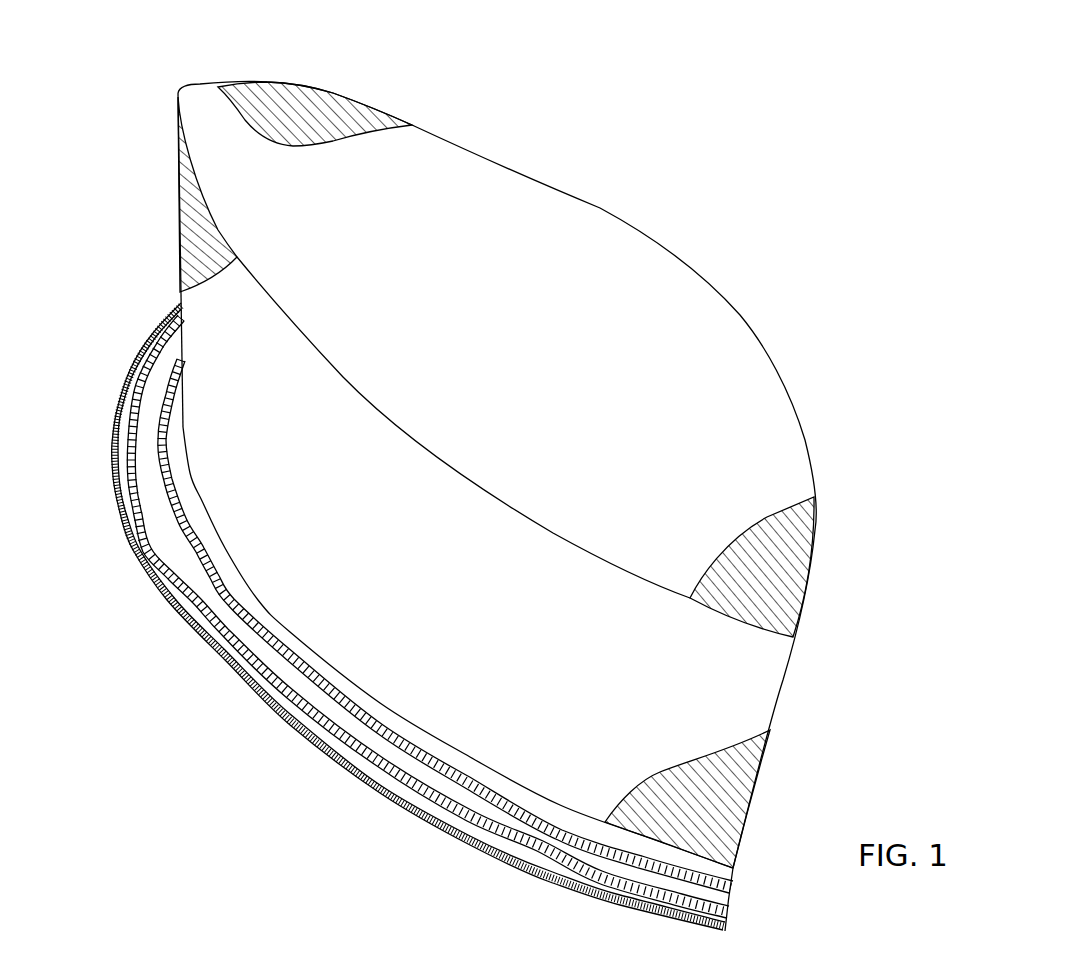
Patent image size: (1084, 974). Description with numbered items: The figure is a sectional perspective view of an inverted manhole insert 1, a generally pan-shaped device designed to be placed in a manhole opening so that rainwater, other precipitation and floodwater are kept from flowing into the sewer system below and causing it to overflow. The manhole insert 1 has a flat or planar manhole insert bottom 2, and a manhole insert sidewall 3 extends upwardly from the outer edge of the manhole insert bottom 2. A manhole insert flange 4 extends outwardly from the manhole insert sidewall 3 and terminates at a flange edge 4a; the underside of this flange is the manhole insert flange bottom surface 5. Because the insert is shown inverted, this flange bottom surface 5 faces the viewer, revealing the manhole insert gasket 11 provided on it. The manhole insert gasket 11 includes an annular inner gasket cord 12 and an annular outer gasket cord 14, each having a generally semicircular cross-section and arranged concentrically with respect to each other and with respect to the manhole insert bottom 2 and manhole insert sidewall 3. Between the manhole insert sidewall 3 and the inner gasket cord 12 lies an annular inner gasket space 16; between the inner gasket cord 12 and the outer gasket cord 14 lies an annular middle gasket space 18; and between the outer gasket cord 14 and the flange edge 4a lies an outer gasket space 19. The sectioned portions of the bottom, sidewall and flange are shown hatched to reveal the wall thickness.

The manhole insert 1 is at (74, 52).
The manhole insert bottom 2 is at (578, 226).
The manhole insert sidewall 3 is at (747, 692).
The manhole insert flange 4 is at (123, 395).
The flange edge 4a is at (110, 423).
The manhole insert flange bottom surface 5 is at (133, 507).
The manhole insert gasket 11 is at (157, 325).
The inner gasket cord 12 is at (180, 503).
The outer gasket cord 14 is at (137, 448).
The inner gasket space 16 is at (244, 580).
The middle gasket space 18 is at (285, 661).
The outer gasket space 19 is at (316, 714).